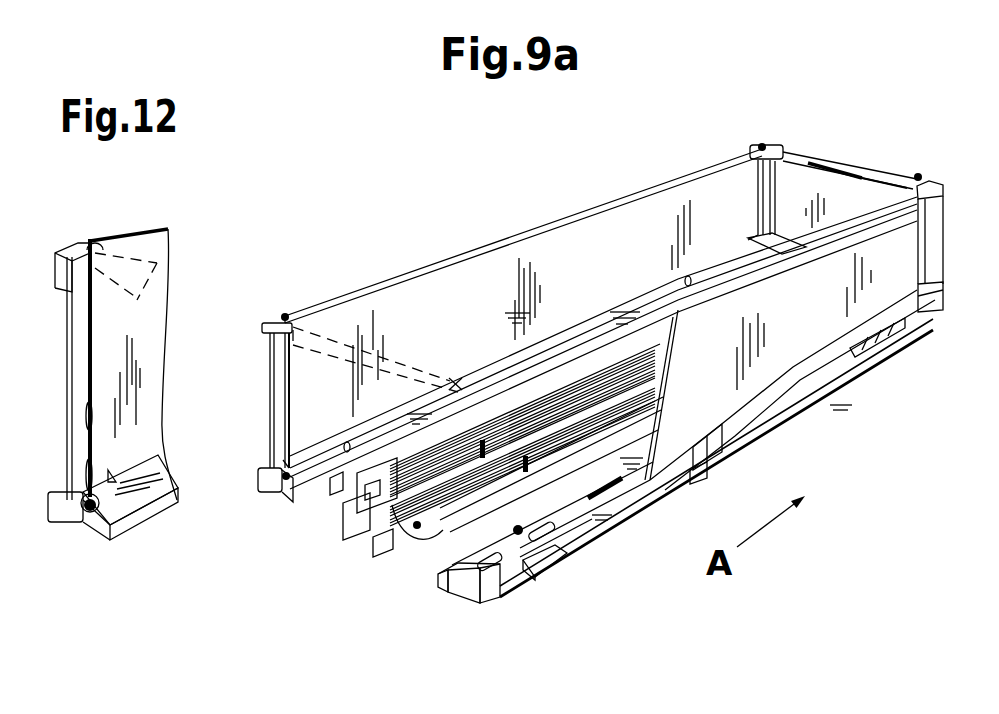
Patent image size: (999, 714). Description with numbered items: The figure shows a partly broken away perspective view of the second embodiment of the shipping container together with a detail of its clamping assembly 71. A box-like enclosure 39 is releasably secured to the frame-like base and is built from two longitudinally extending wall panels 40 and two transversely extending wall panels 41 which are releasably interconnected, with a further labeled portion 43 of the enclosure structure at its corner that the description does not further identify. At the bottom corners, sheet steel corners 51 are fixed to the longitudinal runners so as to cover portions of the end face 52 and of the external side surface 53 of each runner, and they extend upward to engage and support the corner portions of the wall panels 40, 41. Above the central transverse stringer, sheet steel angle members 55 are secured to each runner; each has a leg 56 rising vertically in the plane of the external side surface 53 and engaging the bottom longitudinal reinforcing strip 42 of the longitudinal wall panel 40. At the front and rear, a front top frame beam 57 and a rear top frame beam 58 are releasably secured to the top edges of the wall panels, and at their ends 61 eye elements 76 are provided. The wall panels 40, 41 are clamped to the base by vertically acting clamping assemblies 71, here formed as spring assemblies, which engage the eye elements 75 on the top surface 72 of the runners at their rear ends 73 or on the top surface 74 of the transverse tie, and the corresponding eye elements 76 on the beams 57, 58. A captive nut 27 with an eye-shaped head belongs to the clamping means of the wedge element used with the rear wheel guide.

In FIG. 9A, the captive nut 27 is at (440, 553).
In FIG. 9A, the box-like enclosure 39 is at (875, 345).
In FIG. 9A, the longitudinal wall panel 40 is at (483, 273).
In FIG. 9A, the transverse wall panel 41 is at (840, 190).
In FIG. 9A, the longitudinal reinforcing strip 42 is at (753, 285).
In FIG. 9A, the corner post 43 is at (937, 240).
In FIG. 12, the sheet steel corner 51 is at (67, 513).
In FIG. 9A, the sheet steel corner 51 is at (487, 588).
In FIG. 9A, the end face 52 is at (440, 585).
In FIG. 12, the external side surface 53 is at (110, 472).
In FIG. 9A, the external side surface 53 is at (280, 452).
In FIG. 9A, the sheet steel angle member 55 is at (707, 478).
In FIG. 9A, the leg 56 is at (732, 453).
In FIG. 9A, the front top frame beam 57 is at (833, 170).
In FIG. 9A, the rear top frame beam 58 is at (320, 353).
In FIG. 9A, the end of top frame beam 61 is at (750, 157).
In FIG. 12, the clamping assembly 71 is at (95, 335).
In FIG. 9A, the clamping assembly 71 is at (283, 400).
In FIG. 12, the top surface of runner 72 is at (140, 500).
In FIG. 12, the rear end of runner 73 is at (93, 530).
In FIG. 9A, the top surface of tie 74 is at (760, 240).
In FIG. 9A, the eye element 75 is at (277, 494).
In FIG. 12, the eye element 76 is at (93, 245).
In FIG. 9A, the eye element 76 is at (284, 313).